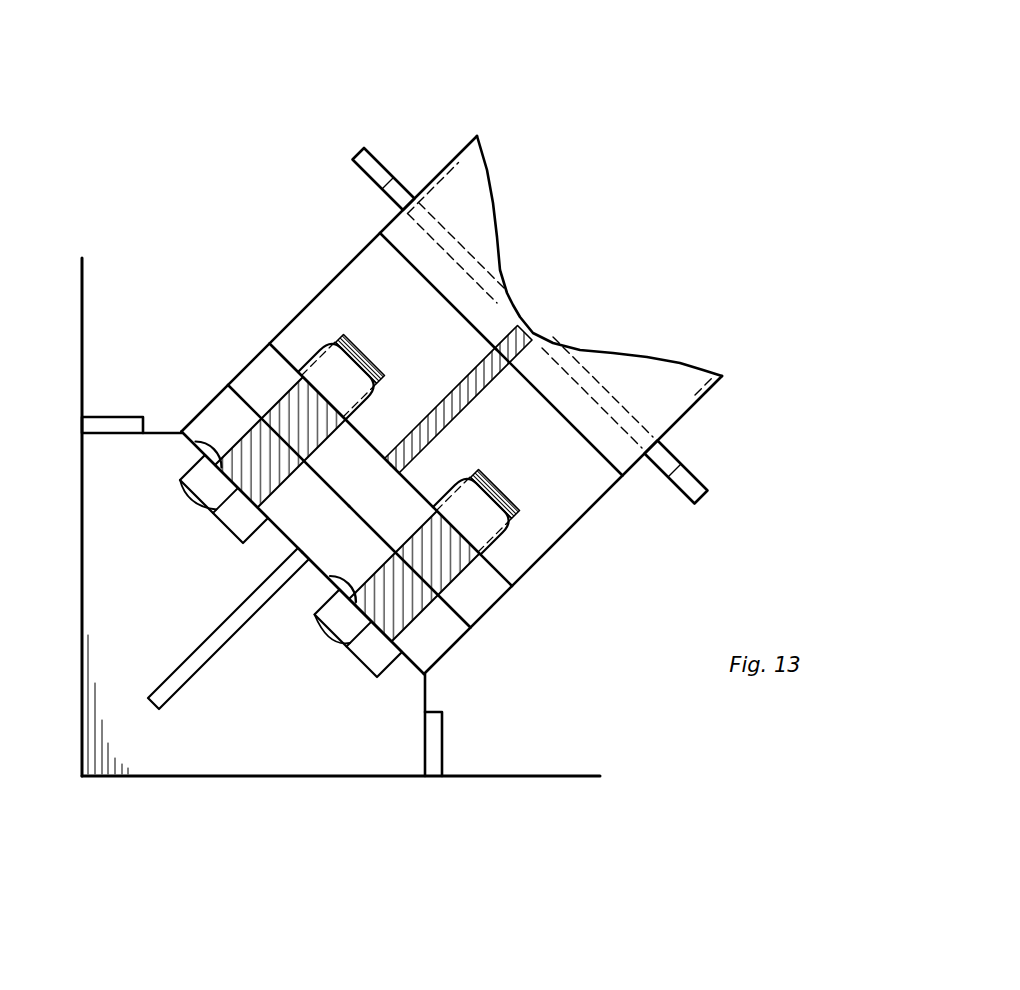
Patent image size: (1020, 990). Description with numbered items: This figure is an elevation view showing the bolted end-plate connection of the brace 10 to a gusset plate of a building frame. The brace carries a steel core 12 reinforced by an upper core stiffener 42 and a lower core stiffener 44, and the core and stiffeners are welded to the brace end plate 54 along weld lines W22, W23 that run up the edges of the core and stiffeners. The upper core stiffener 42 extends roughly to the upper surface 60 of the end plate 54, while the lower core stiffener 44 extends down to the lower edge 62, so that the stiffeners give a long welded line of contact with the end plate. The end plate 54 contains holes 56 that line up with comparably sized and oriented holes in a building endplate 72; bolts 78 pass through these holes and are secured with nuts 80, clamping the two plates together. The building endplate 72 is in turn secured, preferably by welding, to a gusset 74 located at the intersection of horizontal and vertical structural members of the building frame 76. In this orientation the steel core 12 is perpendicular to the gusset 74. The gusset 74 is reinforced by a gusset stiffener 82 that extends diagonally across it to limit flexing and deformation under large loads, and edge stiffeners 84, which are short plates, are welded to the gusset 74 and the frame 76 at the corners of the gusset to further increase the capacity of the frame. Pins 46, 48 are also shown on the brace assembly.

The brace 10 is at (646, 118).
The steel core 12 is at (465, 405).
The upper core stiffener 42 is at (356, 268).
The lower core stiffener 44 is at (598, 478).
The first pin 46 is at (384, 165).
The second pin 48 is at (700, 485).
The end plate 54 is at (498, 603).
The holes 56 is at (188, 450).
The upper surface 60 is at (240, 372).
The lower edge 62 is at (478, 623).
The building endplate 72 is at (455, 650).
The gusset 74 is at (110, 596).
The building frame 76 is at (485, 778).
The bolts 78 is at (365, 665).
The nuts 80 is at (512, 545).
The gusset stiffener 82 is at (190, 680).
The edge stiffeners 84 is at (119, 415).
The weld line W22 is at (385, 455).
The weld line W23 is at (400, 470).